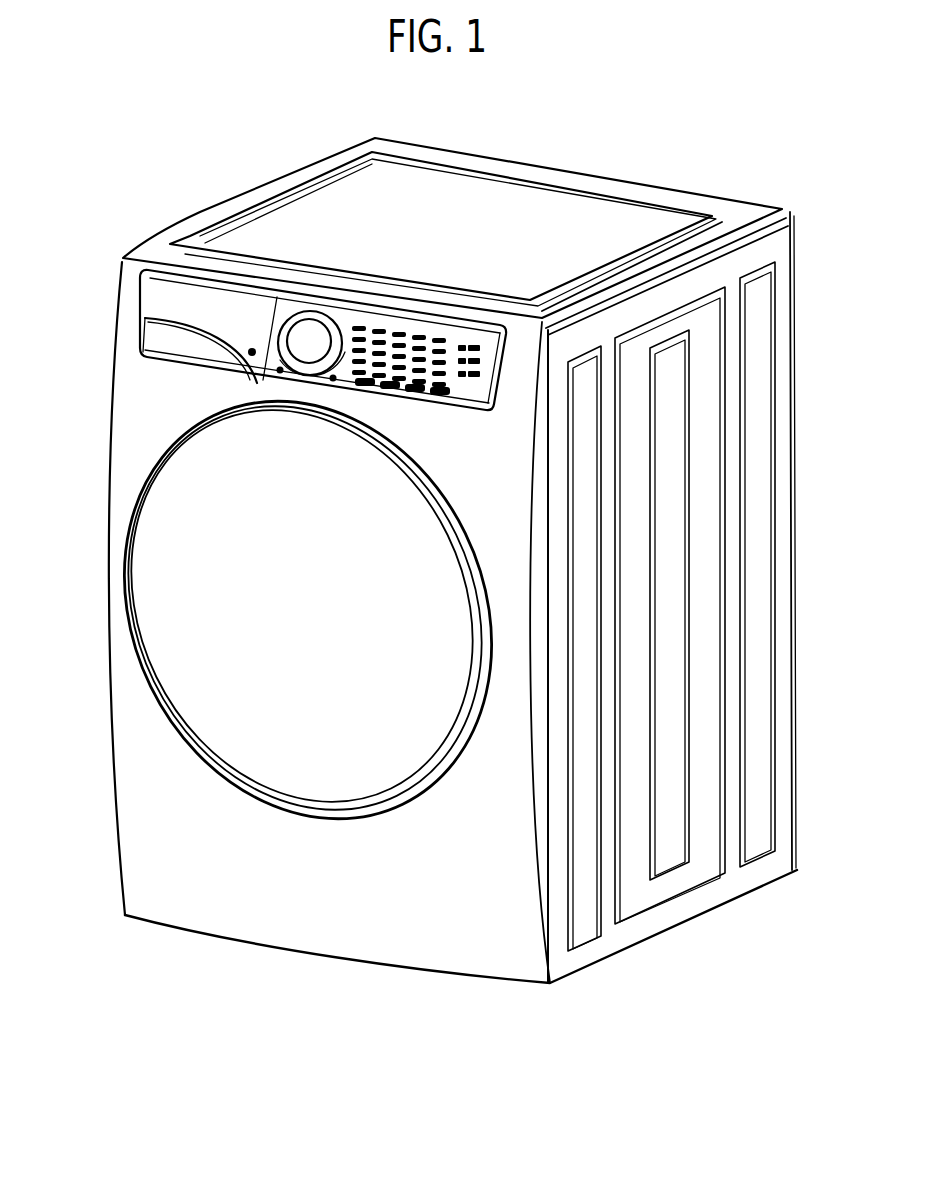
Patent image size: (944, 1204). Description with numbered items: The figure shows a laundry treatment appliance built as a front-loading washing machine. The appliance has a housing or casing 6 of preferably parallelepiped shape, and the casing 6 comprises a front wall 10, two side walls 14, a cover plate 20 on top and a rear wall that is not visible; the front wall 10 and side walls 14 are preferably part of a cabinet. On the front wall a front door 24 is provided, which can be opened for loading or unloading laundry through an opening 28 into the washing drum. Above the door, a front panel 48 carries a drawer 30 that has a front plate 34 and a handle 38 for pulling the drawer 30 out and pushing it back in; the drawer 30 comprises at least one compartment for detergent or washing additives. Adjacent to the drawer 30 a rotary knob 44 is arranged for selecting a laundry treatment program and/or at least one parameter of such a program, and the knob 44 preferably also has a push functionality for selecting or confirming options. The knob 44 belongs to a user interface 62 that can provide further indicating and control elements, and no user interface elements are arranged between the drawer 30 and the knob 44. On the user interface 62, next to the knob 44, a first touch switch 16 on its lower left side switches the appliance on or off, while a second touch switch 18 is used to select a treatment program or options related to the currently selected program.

The casing 6 is at (485, 943).
The front wall 10 is at (312, 912).
The side walls 14 is at (738, 553).
The first touch switch 16 is at (278, 380).
The second touch switch 18 is at (330, 382).
The cover plate 20 is at (450, 232).
The front door 24 is at (375, 816).
The opening 28 is at (245, 622).
The drawer 30 is at (150, 380).
The front plate 34 is at (250, 318).
The handle 38 is at (143, 341).
The rotary knob 44 is at (310, 333).
The front panel 48 is at (220, 392).
The user interface 62 is at (408, 323).